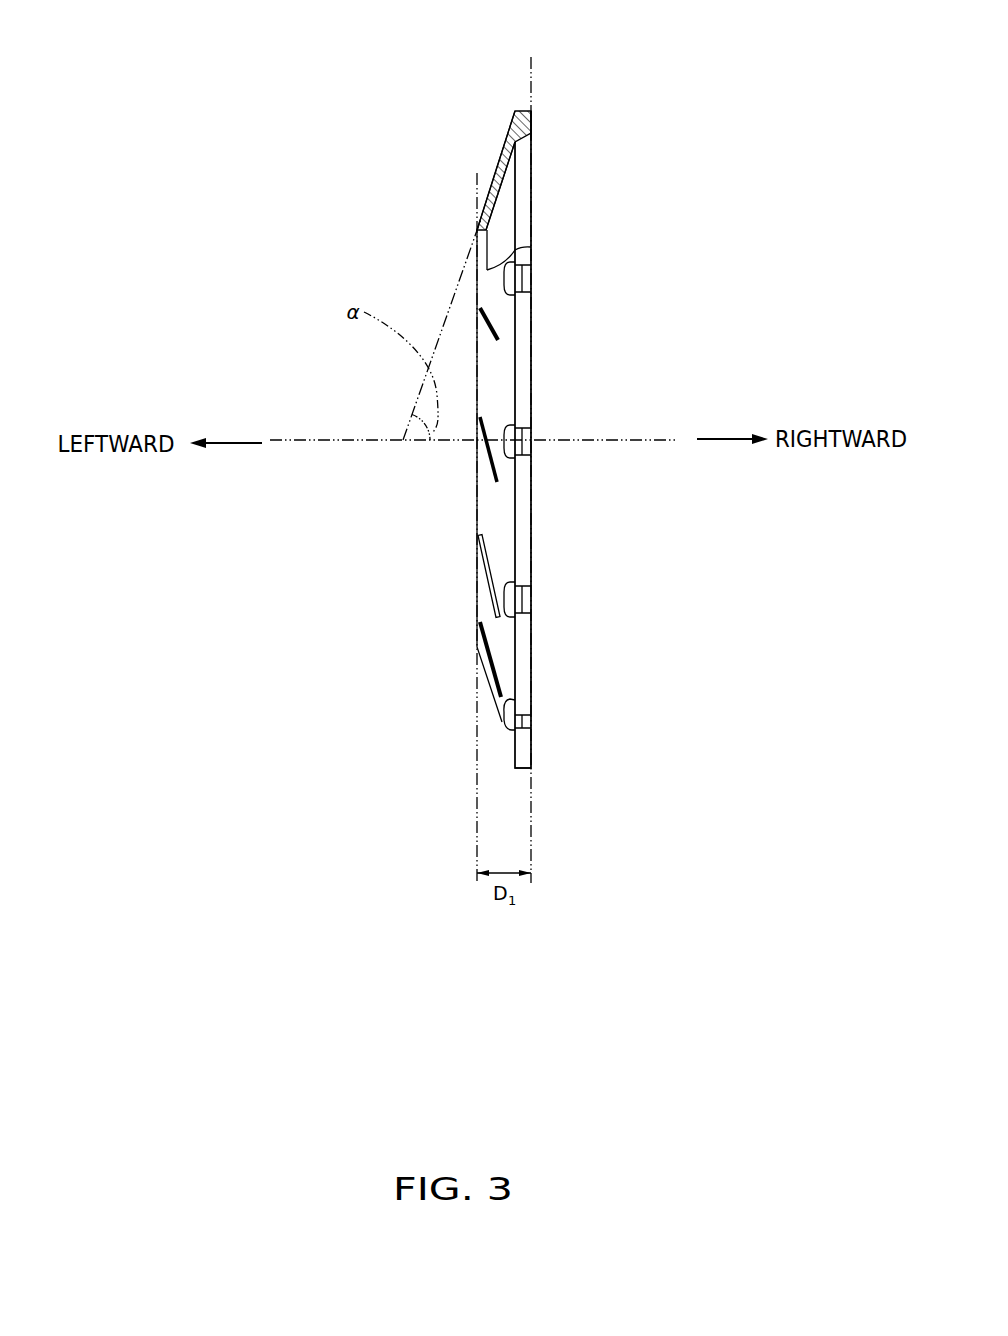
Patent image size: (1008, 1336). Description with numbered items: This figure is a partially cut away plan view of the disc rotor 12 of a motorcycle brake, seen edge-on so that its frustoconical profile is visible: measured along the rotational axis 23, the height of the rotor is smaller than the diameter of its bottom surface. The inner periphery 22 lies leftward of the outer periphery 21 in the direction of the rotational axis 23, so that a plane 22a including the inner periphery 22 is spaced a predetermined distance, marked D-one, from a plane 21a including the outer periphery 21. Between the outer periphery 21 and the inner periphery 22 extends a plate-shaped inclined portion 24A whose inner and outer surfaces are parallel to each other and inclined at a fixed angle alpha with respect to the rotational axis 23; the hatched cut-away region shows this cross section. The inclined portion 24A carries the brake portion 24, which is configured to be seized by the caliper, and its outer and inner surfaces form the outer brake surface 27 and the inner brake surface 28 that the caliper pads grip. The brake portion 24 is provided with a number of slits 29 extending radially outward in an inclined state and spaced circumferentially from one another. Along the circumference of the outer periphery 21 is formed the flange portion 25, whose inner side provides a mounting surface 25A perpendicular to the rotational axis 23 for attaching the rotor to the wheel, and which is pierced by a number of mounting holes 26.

The disc rotor 12 is at (636, 111).
The outer periphery 21 is at (515, 110).
The plane including the outer periphery 21a is at (531, 815).
The inner periphery 22 is at (475, 227).
The plane including the inner periphery 22a is at (477, 815).
The rotational axis 23 is at (638, 440).
The brake portion 24 is at (440, 98).
The inclined portion 24A is at (505, 171).
The flange portion 25 is at (531, 120).
The mounting surface 25A is at (531, 129).
The mounting hole 26 is at (531, 600).
The outer brake surface 27 is at (489, 203).
The inner brake surface 28 is at (477, 213).
The slit 29 is at (488, 455).